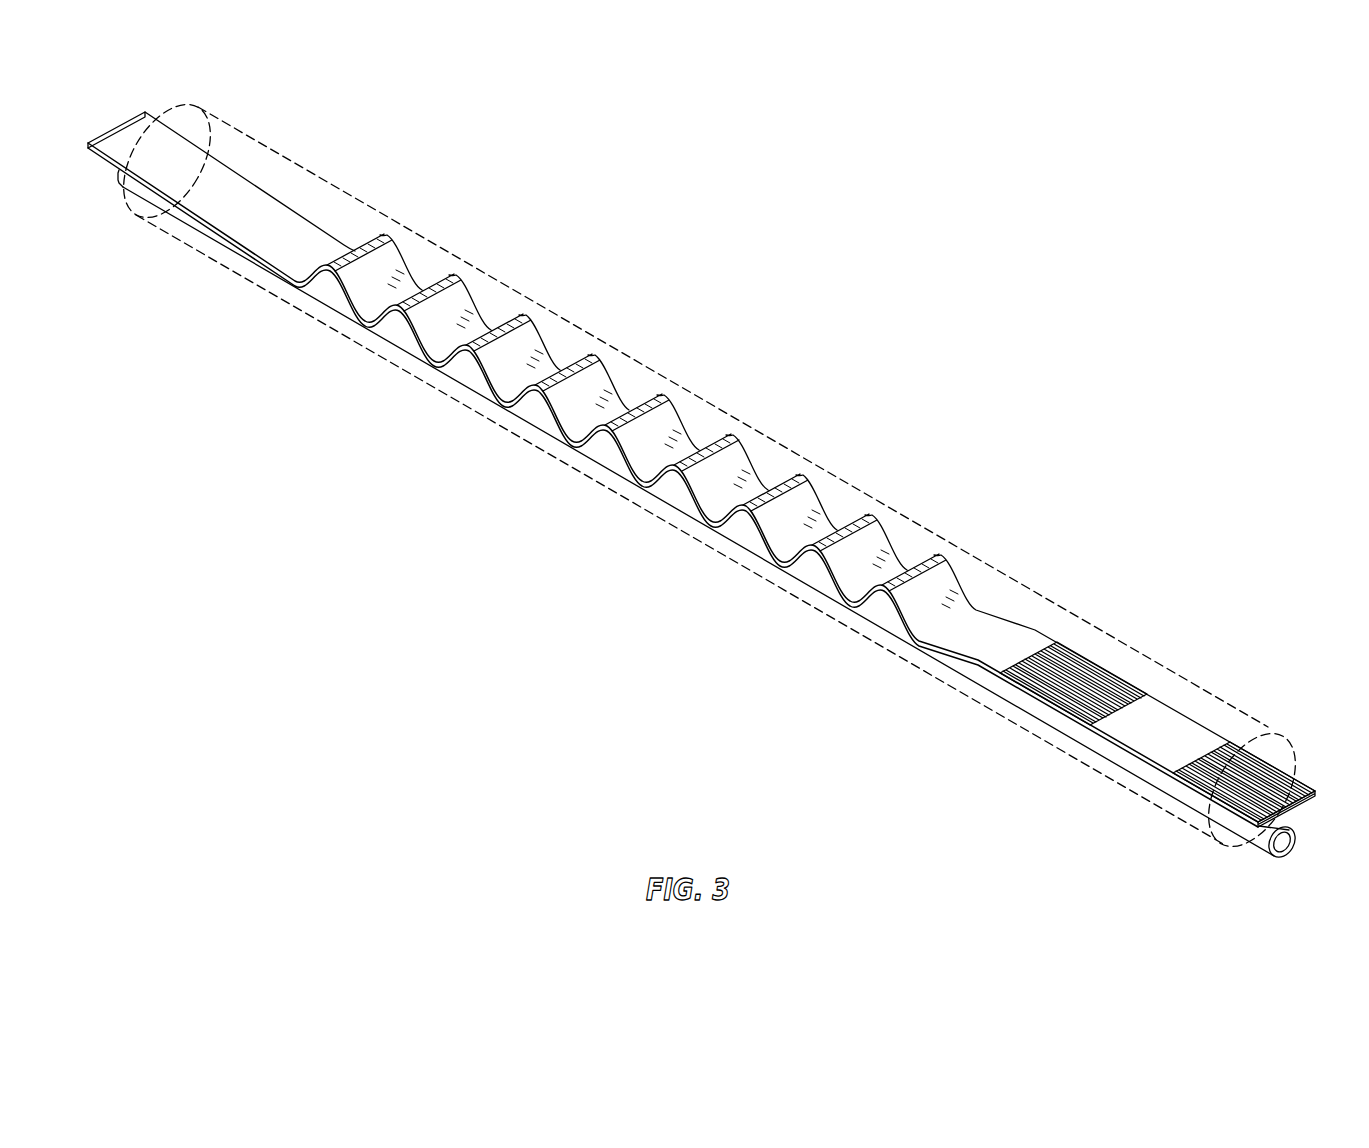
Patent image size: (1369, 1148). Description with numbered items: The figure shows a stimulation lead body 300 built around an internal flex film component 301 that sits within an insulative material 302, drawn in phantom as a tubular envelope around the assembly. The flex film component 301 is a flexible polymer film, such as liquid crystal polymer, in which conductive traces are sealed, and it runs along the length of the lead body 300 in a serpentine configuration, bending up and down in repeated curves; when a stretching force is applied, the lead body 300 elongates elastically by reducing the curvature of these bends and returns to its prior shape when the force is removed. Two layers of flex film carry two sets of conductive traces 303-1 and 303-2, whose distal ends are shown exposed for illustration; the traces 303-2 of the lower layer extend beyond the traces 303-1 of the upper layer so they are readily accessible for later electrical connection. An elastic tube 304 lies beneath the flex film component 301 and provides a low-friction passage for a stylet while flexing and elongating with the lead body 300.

The stimulation lead body 300 is at (707, 476).
The flex film component 301 is at (707, 469).
The insulative material 302 is at (770, 440).
The first set of conductive traces 303-1 is at (1082, 654).
The second set of conductive traces 303-2 is at (1270, 765).
The elastic tube 304 is at (1103, 750).